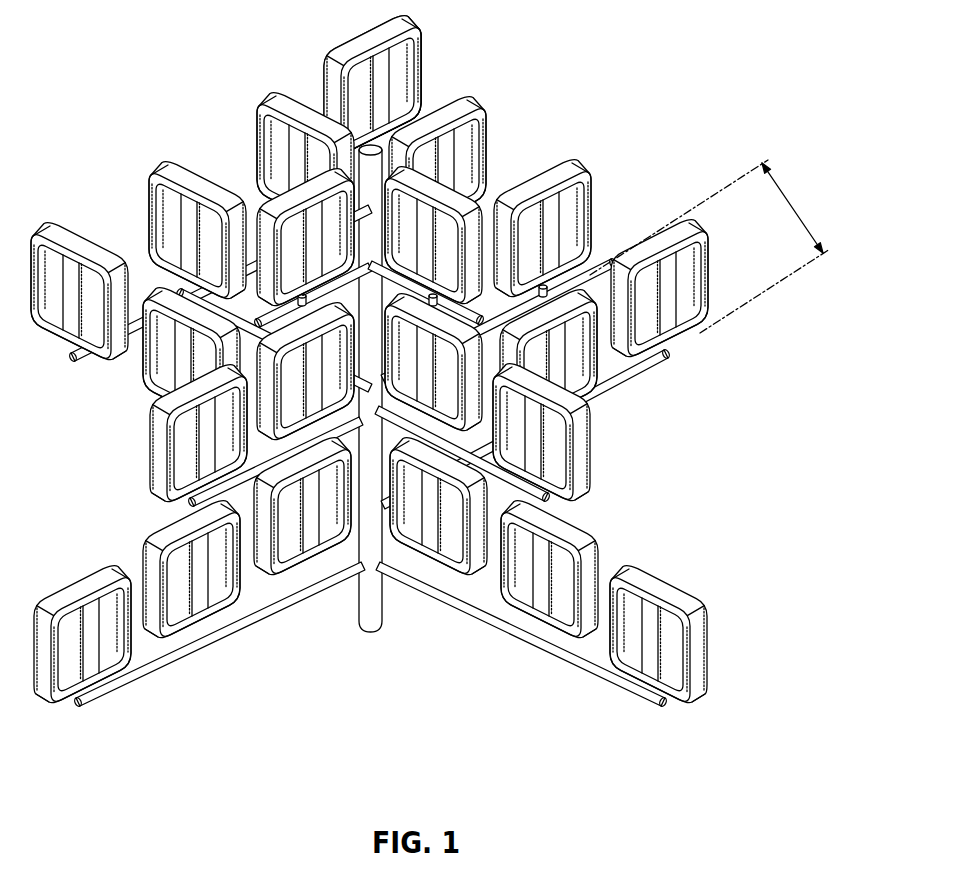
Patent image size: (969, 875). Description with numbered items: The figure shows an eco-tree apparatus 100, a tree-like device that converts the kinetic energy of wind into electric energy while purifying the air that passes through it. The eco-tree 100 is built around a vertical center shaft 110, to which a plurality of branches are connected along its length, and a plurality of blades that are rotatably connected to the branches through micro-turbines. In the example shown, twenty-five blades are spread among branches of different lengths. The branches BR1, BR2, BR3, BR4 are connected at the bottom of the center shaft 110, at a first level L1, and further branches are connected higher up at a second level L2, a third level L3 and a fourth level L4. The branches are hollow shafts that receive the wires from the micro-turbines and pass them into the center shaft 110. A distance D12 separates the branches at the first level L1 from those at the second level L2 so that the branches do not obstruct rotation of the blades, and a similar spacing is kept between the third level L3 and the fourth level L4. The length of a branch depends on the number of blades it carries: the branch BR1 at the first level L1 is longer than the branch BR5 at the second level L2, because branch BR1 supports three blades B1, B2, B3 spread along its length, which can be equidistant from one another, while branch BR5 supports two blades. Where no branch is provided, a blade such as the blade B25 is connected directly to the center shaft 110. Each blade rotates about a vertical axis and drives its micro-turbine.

The eco-tree apparatus 100 is at (432, 394).
The center shaft 110 is at (378, 600).
The blade B1 is at (76, 712).
The blade B2 is at (206, 600).
The blade B3 is at (286, 548).
The blade B25 is at (330, 55).
The branch BR1 is at (130, 660).
The branch BR2 is at (92, 372).
The branch BR3 is at (623, 380).
The branch BR4 is at (600, 656).
The branch BR5 is at (206, 500).
The first level L1 is at (721, 268).
The second level L2 is at (604, 190).
The third level L3 is at (500, 140).
The fourth level L4 is at (433, 66).
The distance D12 is at (711, 246).